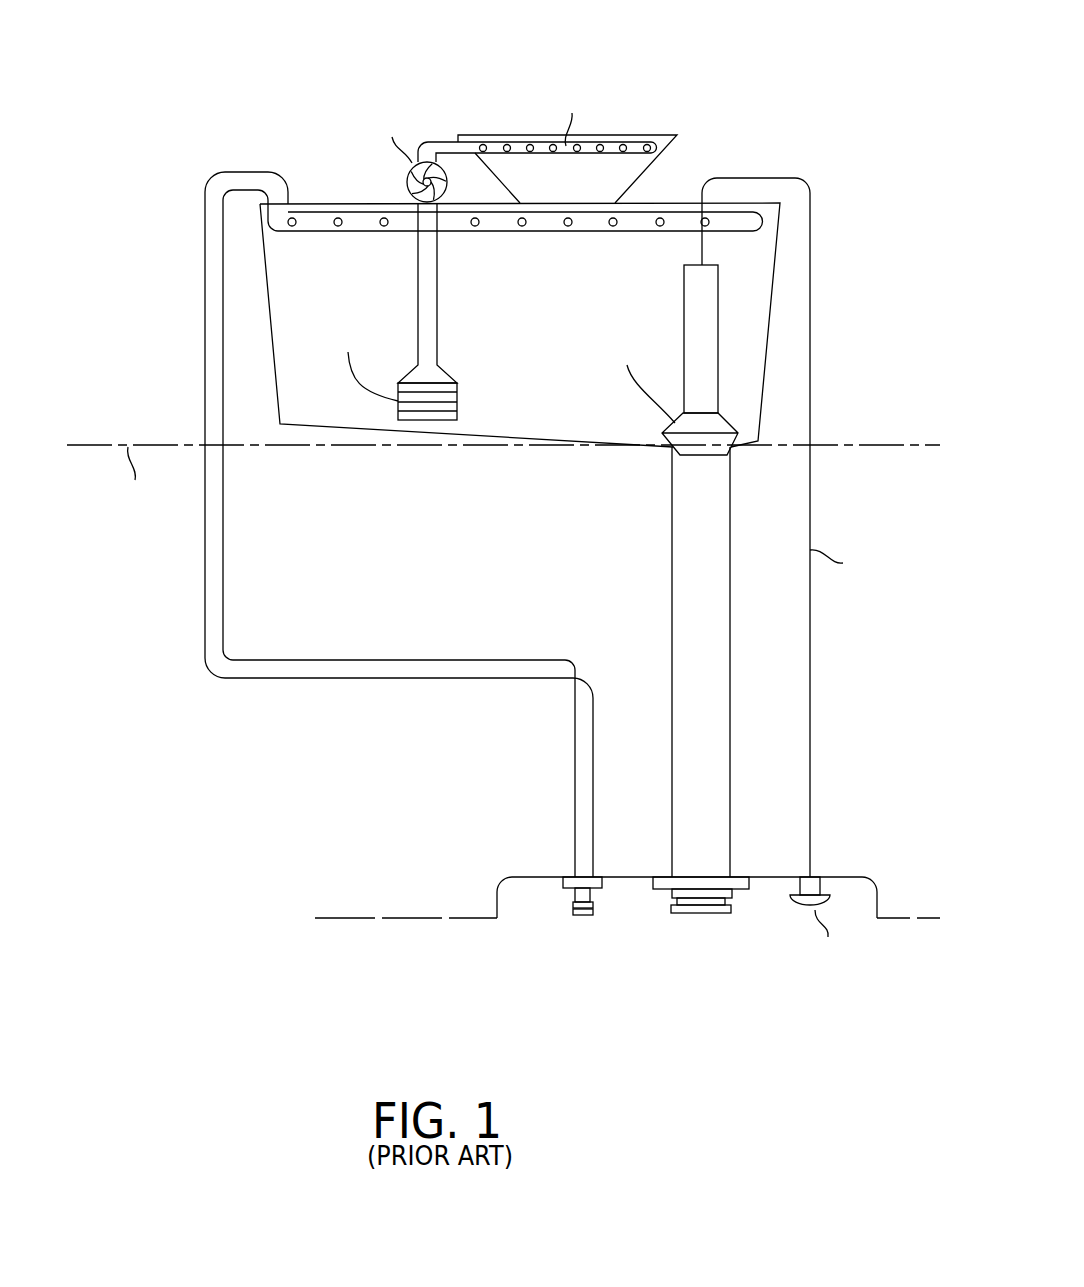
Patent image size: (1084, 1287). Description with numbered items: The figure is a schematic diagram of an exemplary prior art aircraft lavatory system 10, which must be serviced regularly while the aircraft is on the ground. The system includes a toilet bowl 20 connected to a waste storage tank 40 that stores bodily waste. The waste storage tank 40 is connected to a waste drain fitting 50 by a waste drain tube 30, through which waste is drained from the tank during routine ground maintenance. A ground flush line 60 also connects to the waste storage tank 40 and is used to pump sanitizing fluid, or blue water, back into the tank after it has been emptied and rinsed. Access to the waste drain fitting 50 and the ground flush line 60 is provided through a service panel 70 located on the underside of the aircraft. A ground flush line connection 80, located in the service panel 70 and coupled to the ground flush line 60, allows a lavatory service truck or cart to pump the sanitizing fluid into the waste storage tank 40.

The aircraft lavatory system 10 is at (212, 94).
The toilet bowl 20 is at (677, 136).
The waste drain tube 30 is at (731, 777).
The waste storage tank 40 is at (775, 287).
The waste drain fitting 50 is at (697, 913).
The ground flush line 60 is at (213, 262).
The service panel 70 is at (505, 877).
The ground flush line connection 80 is at (577, 917).